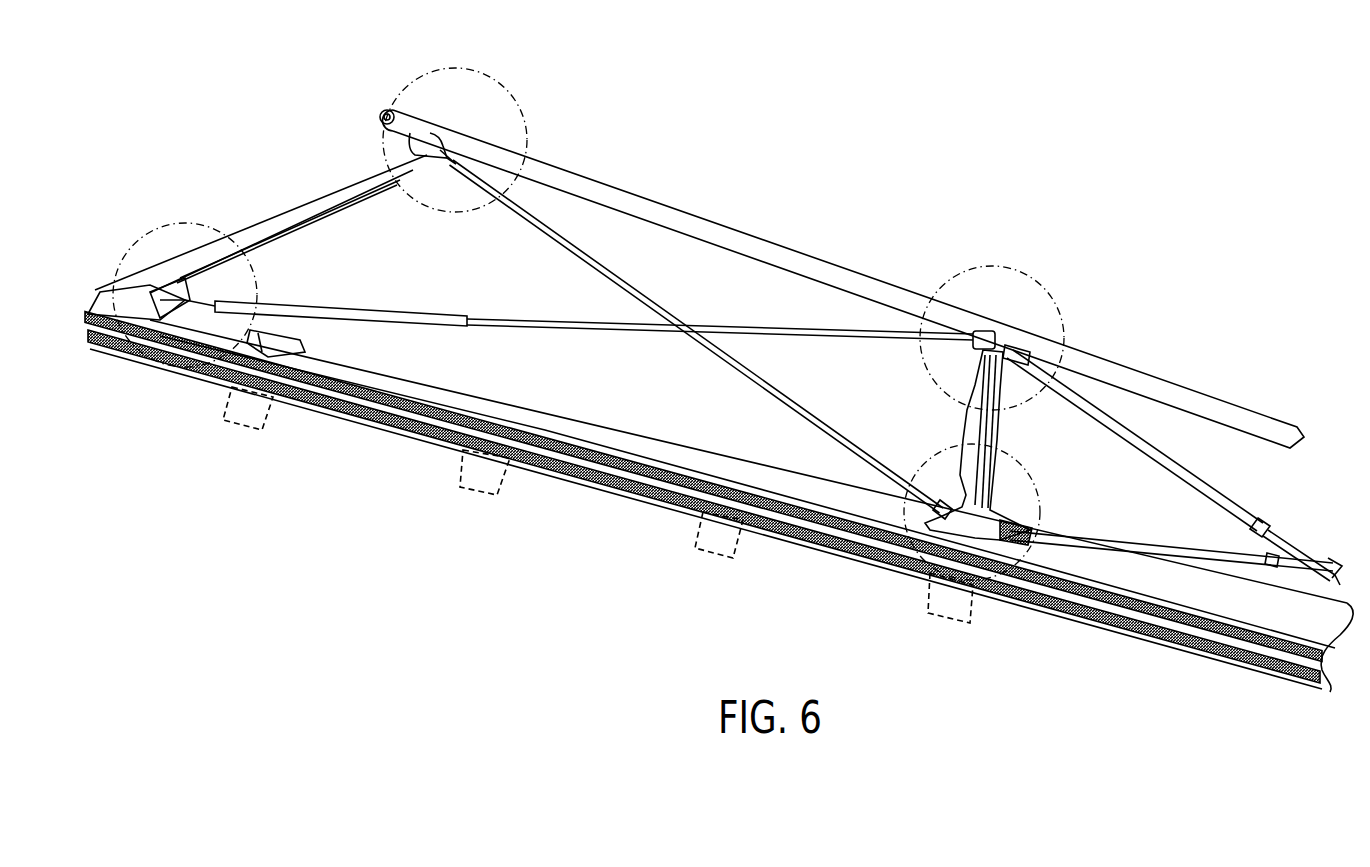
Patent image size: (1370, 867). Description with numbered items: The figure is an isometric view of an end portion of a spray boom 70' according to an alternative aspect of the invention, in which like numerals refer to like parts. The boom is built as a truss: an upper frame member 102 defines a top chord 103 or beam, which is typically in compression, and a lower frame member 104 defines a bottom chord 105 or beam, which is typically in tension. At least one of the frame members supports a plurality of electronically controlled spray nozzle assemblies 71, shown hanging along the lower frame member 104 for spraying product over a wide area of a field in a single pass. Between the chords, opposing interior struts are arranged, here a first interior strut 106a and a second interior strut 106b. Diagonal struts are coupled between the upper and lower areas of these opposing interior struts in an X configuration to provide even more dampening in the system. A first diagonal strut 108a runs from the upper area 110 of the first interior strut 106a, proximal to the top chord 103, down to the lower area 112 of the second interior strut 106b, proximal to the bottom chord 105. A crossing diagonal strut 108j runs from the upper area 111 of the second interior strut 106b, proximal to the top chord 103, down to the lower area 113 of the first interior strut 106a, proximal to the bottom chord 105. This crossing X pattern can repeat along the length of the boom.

The spray boom 70' is at (221, 30).
The spray nozzle assembly 71 is at (243, 423).
The upper frame member 102 is at (640, 200).
The top chord 103 is at (633, 155).
The lower frame member 104 is at (135, 340).
The bottom chord 105 is at (242, 492).
The first interior strut 106a is at (270, 217).
The second interior strut 106b is at (962, 433).
The first diagonal strut 108a is at (740, 388).
The crossing diagonal strut 108j is at (388, 300).
The upper area of the first interior strut 110 is at (482, 90).
The upper area of the second interior strut 111 is at (1047, 290).
The lower area of the second interior strut 112 is at (1042, 488).
The lower area of the first interior strut 113 is at (192, 232).